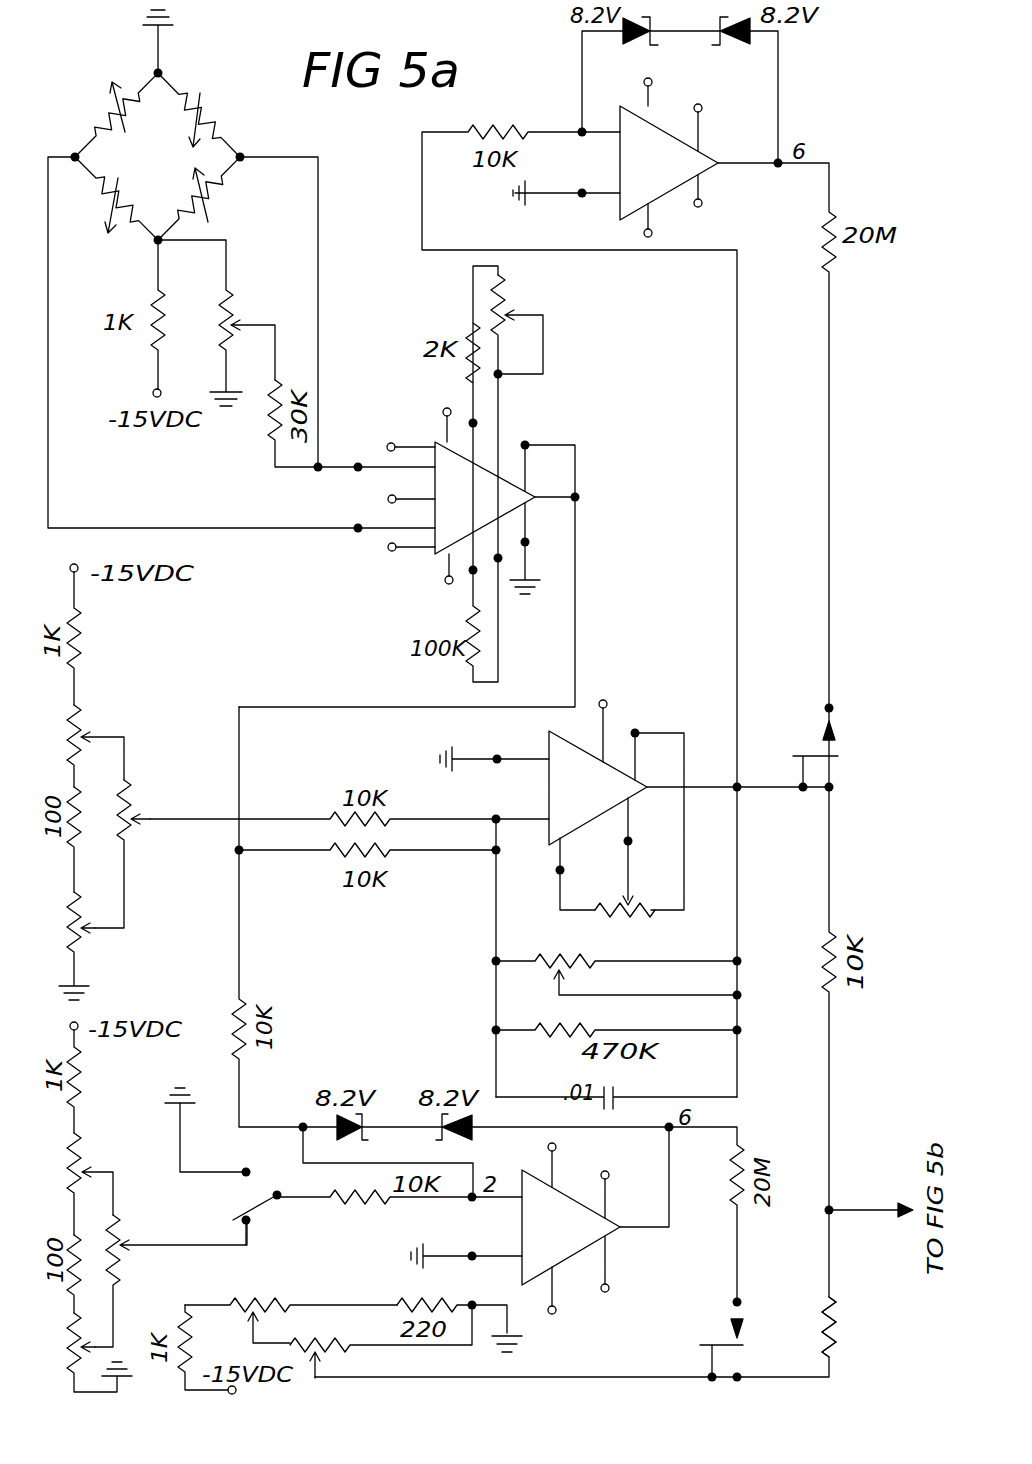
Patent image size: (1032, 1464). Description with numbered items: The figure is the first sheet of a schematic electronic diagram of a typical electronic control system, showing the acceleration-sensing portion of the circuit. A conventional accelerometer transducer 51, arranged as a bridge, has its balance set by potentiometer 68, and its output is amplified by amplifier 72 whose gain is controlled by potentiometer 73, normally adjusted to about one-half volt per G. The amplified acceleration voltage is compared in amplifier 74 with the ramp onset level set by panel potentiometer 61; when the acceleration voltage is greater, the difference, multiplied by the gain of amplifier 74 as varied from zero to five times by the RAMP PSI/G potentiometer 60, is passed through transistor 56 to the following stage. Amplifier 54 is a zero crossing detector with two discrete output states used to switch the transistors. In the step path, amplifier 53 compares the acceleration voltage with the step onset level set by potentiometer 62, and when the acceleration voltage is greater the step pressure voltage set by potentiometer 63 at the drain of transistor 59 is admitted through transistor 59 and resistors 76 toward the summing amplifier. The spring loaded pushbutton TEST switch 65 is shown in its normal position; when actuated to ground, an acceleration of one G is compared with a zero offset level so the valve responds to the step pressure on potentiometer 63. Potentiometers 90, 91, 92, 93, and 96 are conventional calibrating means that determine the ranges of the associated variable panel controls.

The accelerometer transducer 51 is at (162, 200).
The potentiometer 68 is at (234, 300).
The amplifier 72 is at (437, 514).
The potentiometer 73 is at (505, 300).
The amplifier 54 is at (620, 106).
The transistor 56 is at (808, 756).
The amplifier 74 is at (549, 772).
The potentiometer 60 is at (557, 956).
The potentiometer 61 is at (129, 838).
The potentiometer 92 is at (77, 949).
The potentiometer 93 is at (77, 719).
The potentiometer 91 is at (78, 1147).
The potentiometer 62 is at (120, 1290).
The potentiometer 90 is at (73, 1330).
The switch 65 is at (279, 1202).
The potentiometer 96 is at (267, 1300).
The potentiometer 63 is at (308, 1347).
The amplifier 53 is at (522, 1213).
The transistor 59 is at (715, 1345).
The resistors 76 is at (829, 1317).